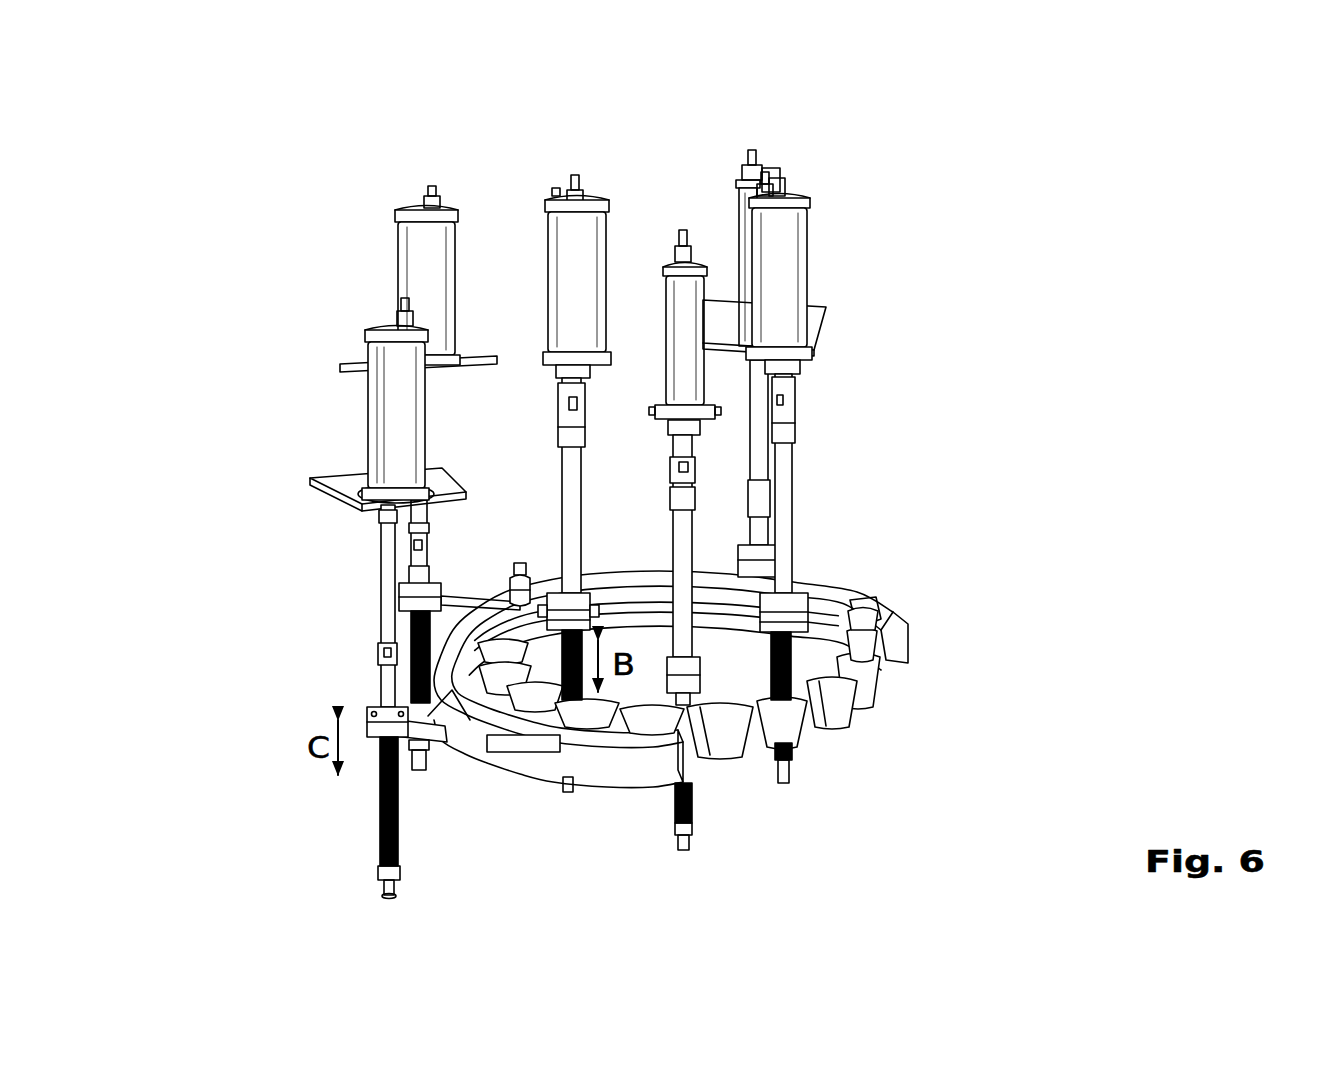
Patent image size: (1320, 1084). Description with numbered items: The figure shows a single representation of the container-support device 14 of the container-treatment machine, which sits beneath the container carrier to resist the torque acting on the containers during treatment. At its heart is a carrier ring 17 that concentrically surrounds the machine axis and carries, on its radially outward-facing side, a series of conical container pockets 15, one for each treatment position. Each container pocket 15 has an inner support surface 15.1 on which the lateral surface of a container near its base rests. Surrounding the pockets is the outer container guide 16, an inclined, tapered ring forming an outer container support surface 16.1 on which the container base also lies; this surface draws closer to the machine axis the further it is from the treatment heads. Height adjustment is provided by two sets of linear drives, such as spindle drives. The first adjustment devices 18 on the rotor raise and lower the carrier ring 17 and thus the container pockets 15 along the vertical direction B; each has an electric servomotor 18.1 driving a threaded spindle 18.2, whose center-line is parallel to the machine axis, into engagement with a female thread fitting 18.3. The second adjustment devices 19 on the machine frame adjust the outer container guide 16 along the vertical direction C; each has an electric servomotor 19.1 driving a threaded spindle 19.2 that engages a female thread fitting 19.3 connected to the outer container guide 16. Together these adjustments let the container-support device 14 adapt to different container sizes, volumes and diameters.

The container-support device 14 is at (751, 699).
The conical container pocket 15 is at (713, 758).
The inner support surface 15.1 is at (833, 700).
The outer container guide 16 is at (908, 623).
The outer container support surface 16.1 is at (909, 571).
The carrier ring 17 is at (633, 615).
The first adjustment device 18 is at (746, 467).
The electric servomotor 18.1 is at (566, 255).
The threaded spindle 18.2 is at (556, 688).
The female thread fitting 18.3 is at (563, 592).
The second adjustment device 19 is at (524, 495).
The electric servomotor 19.1 is at (372, 423).
The threaded spindle 19.2 is at (380, 813).
The female thread fitting 19.3 is at (370, 717).